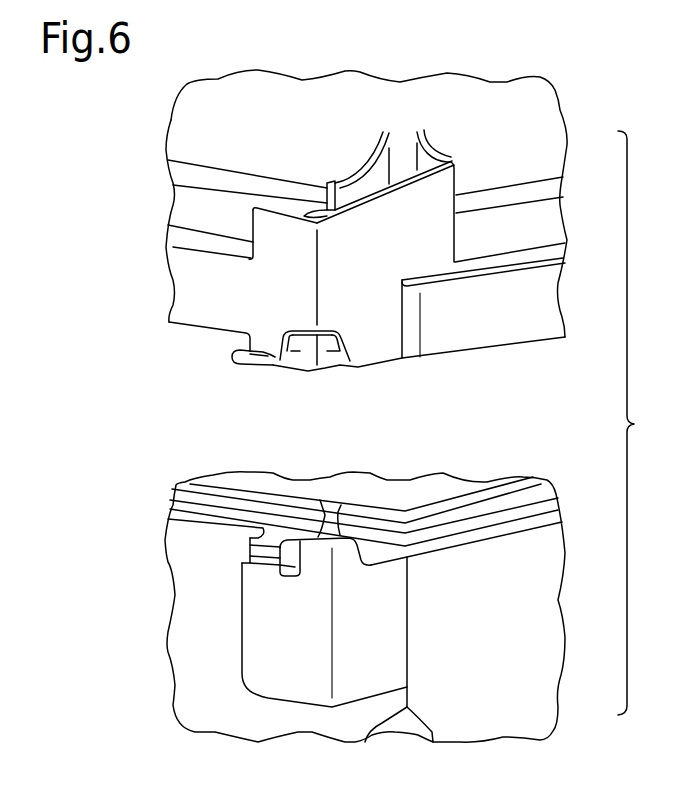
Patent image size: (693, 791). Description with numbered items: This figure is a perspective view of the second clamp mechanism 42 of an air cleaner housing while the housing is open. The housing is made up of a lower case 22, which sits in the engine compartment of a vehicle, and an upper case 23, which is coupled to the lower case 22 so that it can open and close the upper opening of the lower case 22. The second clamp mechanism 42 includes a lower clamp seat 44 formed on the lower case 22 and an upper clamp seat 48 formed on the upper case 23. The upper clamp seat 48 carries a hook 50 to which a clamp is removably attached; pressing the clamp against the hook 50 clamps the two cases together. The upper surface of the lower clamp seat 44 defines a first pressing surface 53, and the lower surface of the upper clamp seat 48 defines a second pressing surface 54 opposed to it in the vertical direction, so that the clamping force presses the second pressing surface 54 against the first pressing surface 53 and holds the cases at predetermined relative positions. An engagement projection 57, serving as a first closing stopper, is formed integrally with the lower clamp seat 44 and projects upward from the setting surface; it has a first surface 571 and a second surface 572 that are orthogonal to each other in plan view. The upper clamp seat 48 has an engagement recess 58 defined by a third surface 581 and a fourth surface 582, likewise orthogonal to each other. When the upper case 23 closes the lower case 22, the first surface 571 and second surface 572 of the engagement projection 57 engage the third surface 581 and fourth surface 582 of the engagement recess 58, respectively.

The lower case 22 is at (553, 598).
The upper case 23 is at (548, 302).
The second clamp mechanism 42 is at (642, 423).
The lower clamp seat 44 is at (404, 647).
The upper clamp seat 48 is at (428, 192).
The hook 50 is at (312, 214).
The first pressing surface 53 is at (250, 560).
The second pressing surface 54 is at (248, 370).
The engagement projection 57 is at (284, 578).
The first surface 571 is at (320, 500).
The second surface 572 is at (341, 505).
The engagement recess 58 is at (302, 373).
The third surface 581 is at (283, 348).
The fourth surface 582 is at (350, 348).